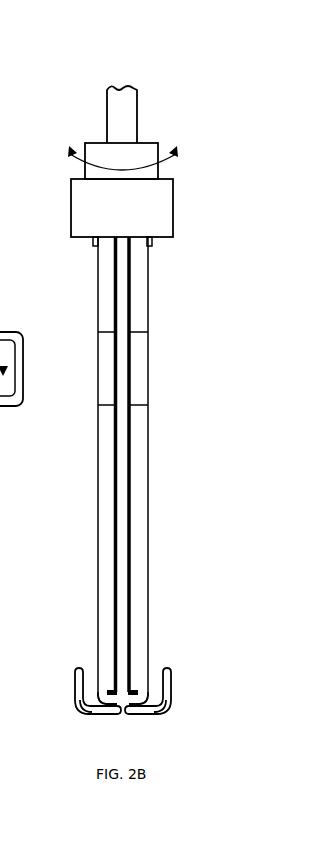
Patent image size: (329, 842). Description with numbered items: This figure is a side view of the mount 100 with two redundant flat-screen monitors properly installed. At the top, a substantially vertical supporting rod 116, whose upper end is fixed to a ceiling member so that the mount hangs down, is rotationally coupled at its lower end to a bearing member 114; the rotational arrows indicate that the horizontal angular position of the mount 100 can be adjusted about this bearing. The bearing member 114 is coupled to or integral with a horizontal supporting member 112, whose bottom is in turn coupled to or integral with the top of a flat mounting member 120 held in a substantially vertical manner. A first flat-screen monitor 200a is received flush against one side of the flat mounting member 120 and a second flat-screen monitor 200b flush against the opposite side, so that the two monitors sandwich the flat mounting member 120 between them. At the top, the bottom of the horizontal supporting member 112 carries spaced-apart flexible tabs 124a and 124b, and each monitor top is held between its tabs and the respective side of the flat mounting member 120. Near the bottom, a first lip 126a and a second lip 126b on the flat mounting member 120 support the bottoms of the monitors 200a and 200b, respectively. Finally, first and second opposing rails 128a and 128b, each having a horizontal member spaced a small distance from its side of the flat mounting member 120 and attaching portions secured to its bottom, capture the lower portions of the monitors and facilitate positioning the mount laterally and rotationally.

The mount 100 is at (115, 61).
The horizontal supporting member 112 is at (90, 209).
The bearing member 114 is at (97, 153).
The vertical supporting rod 116 is at (118, 118).
The flat mounting member 120 is at (122, 521).
The flexible tabs 124a is at (94, 249).
The flexible tabs 124b is at (151, 249).
The first lip 126a is at (78, 712).
The second lip 126b is at (168, 712).
The first opposing rail 128a is at (78, 668).
The second opposing rail 128b is at (166, 668).
The first flat-screen monitor 200a is at (99, 482).
The second flat-screen monitor 200b is at (146, 482).